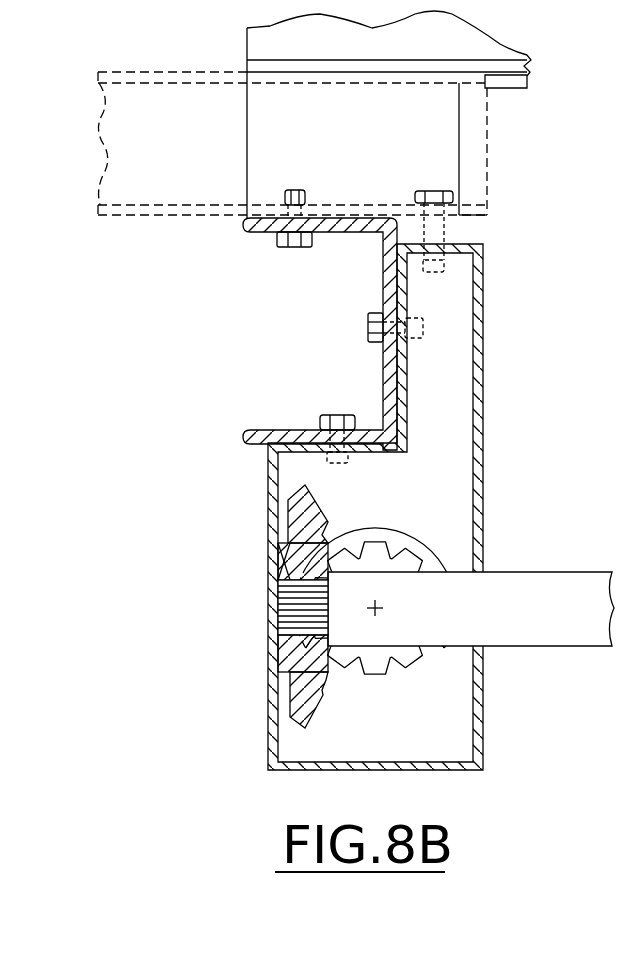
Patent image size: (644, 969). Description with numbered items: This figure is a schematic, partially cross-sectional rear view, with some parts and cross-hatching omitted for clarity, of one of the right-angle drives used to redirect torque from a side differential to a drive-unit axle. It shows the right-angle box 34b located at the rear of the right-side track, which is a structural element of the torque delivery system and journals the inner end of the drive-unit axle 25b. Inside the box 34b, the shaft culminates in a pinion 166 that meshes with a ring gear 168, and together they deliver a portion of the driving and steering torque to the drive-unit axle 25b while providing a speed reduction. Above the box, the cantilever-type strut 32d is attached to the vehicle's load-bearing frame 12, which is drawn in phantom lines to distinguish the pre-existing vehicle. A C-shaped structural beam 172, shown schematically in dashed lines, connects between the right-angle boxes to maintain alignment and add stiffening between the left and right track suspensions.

The cantilever-type strut 32d is at (247, 42).
The C-shaped structural beam 172 is at (122, 182).
The load-bearing frame 12 is at (348, 225).
The right-angle box 34b is at (427, 770).
The pinion 166 is at (388, 552).
The ring gear 168 is at (302, 692).
The drive-unit axle 25b is at (543, 633).